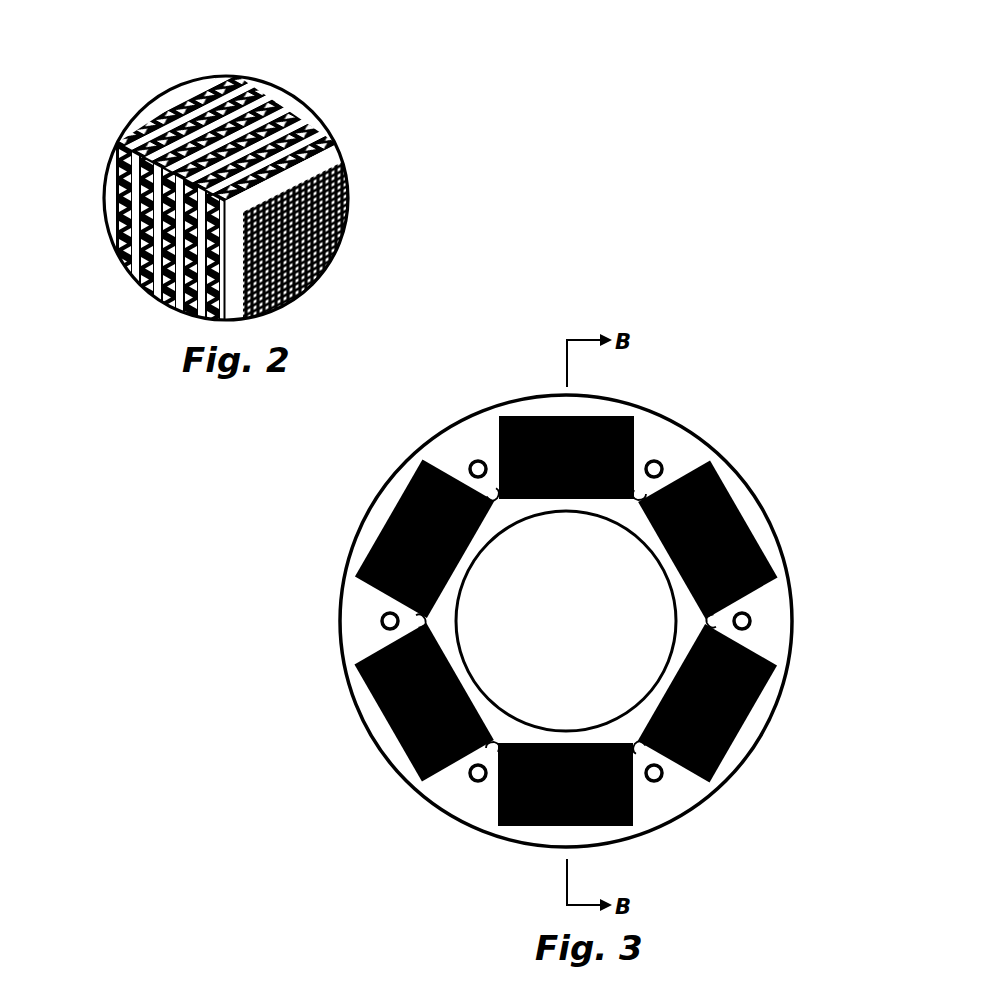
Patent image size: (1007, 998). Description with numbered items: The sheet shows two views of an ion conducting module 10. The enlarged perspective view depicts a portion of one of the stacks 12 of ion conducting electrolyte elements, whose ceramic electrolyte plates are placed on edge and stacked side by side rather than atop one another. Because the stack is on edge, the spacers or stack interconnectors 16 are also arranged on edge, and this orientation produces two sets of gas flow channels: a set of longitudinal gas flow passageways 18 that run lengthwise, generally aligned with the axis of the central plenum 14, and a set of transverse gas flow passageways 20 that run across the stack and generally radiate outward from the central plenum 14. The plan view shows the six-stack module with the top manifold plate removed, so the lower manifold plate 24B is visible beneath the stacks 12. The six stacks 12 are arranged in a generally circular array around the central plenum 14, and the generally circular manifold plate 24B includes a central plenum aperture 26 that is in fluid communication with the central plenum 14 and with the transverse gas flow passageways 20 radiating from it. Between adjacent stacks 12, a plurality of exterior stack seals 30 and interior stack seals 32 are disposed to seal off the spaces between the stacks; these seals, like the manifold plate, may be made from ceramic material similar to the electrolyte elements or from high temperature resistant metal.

In FIG. 3, the ion conducting module 10 is at (674, 328).
In FIG. 3, the stacks 12 is at (637, 430).
In FIG. 3, the central plenum 14 is at (580, 638).
In FIG. 2, the stack interconnectors 16 is at (313, 133).
In FIG. 2, the longitudinal gas flow passageways 18 is at (227, 80).
In FIG. 2, the transverse gas flow passageways 20 is at (117, 213).
In FIG. 3, the manifold plate 24B is at (367, 515).
In FIG. 3, the central plenum aperture 26 is at (380, 588).
In FIG. 3, the exterior stack seals 30 is at (640, 497).
In FIG. 3, the interior stack seals 32 is at (747, 523).